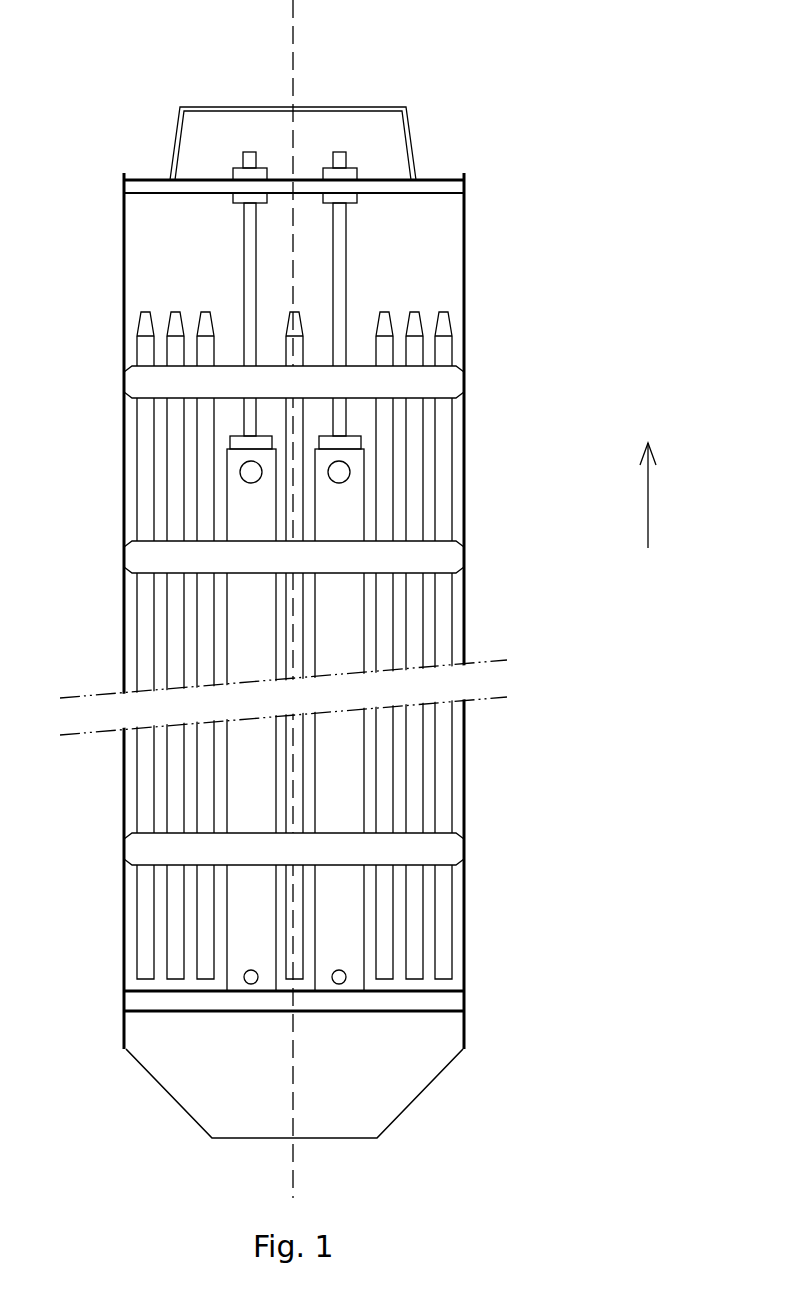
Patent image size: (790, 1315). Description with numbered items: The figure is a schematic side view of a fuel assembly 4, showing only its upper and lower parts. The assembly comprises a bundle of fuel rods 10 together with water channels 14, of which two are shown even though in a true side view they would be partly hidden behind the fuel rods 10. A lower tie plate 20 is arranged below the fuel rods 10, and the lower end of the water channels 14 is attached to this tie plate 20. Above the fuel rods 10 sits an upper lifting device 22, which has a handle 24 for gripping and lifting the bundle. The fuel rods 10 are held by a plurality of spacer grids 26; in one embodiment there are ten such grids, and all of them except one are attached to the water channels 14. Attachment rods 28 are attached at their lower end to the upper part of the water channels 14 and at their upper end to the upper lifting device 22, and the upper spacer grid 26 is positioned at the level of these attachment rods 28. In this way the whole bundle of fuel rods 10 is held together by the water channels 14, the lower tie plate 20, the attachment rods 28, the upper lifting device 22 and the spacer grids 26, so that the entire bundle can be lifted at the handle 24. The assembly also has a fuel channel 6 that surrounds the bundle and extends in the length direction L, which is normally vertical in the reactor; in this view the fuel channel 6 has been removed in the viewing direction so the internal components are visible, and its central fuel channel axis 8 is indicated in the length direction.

The fuel assembly 4 is at (366, 599).
The fuel channel 6 is at (465, 298).
The central fuel channel axis 8 is at (293, 18).
The fuel rods 10 is at (348, 645).
The water channels 14 is at (352, 778).
The lower tie plate 20 is at (442, 1003).
The upper lifting device 22 is at (437, 182).
The handle 24 is at (375, 107).
The spacer grids 26 is at (432, 382).
The attachment rods 28 is at (252, 231).